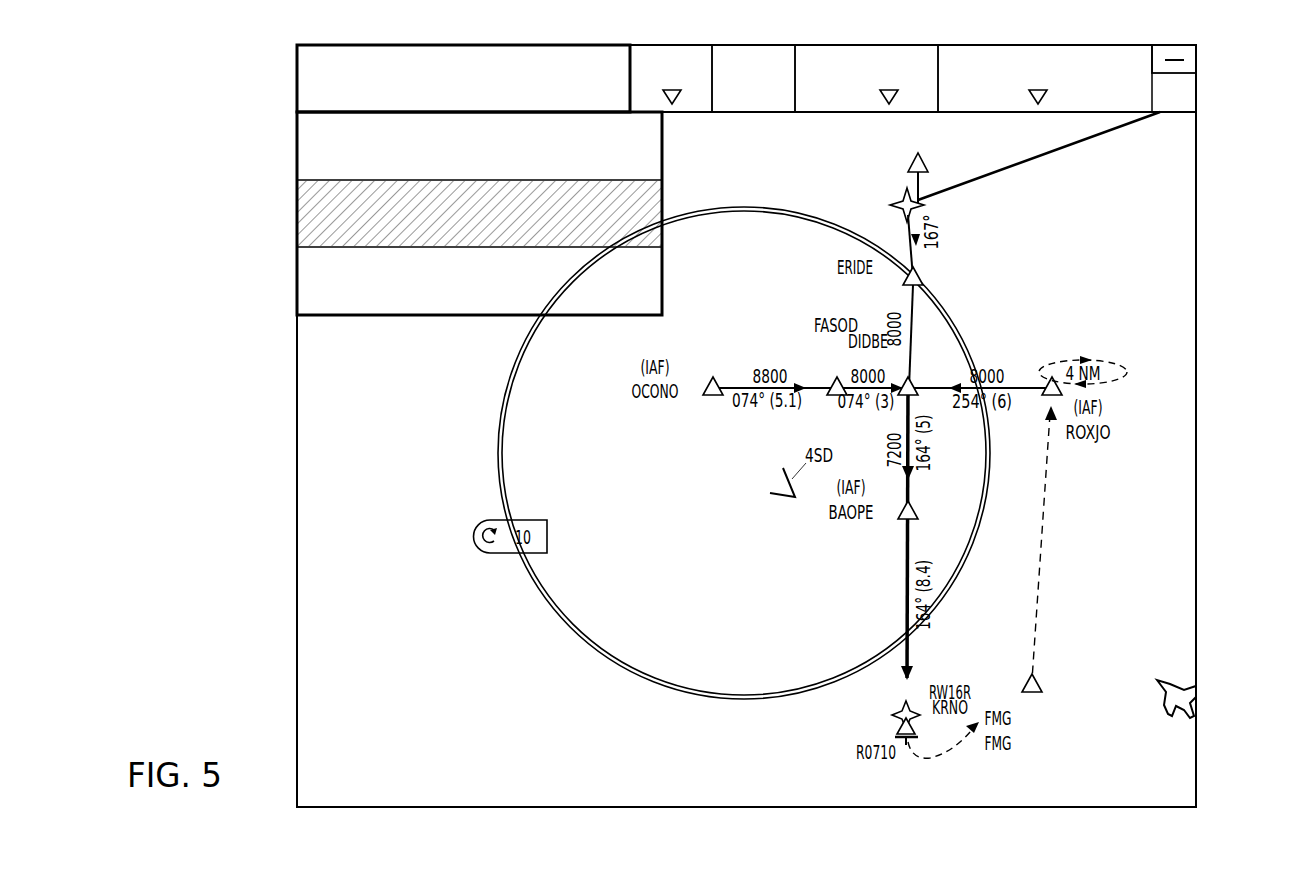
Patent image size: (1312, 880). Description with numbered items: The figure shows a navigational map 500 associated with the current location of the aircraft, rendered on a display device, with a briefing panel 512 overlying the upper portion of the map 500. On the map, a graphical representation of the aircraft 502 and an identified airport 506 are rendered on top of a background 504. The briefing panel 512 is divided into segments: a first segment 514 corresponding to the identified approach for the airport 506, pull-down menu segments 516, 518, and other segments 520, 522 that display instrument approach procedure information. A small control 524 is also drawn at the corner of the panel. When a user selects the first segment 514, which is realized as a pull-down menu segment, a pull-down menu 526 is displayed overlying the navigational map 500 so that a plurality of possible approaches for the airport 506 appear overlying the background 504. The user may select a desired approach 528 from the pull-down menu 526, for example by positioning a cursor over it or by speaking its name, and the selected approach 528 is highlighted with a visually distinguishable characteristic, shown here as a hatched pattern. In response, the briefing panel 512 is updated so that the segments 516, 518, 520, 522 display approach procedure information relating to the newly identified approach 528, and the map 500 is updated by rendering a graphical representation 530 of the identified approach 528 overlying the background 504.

The navigational map 500 is at (1208, 191).
The aircraft 502 is at (1158, 680).
The background 504 is at (1070, 633).
The identified airport 506 is at (878, 728).
The briefing panel 512 is at (262, 88).
The first segment 514 is at (566, 45).
The pull-down menu segment 516 is at (690, 45).
The pull-down menu segment 518 is at (862, 45).
The segment 520 is at (1052, 45).
The segment 522 is at (745, 45).
The minimize button 524 is at (1190, 62).
The pull-down menu 526 is at (378, 315).
The approach 528 is at (288, 218).
The graphical representation of the identified approach 530 is at (886, 594).